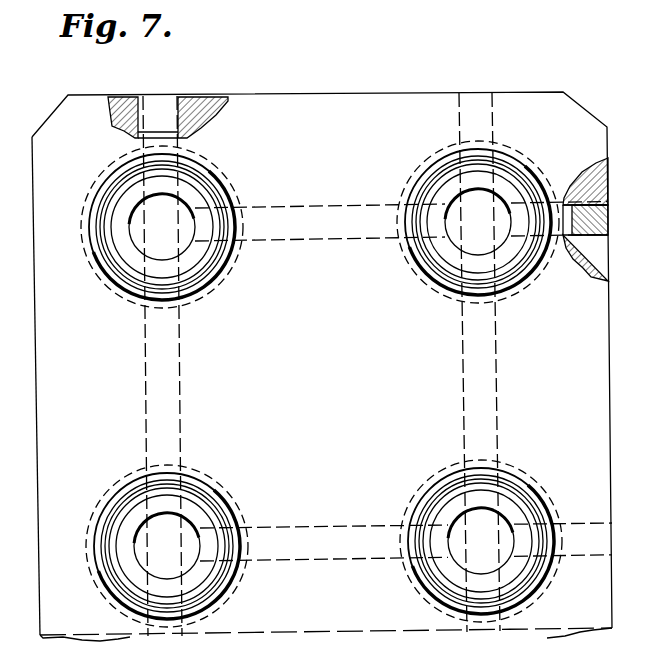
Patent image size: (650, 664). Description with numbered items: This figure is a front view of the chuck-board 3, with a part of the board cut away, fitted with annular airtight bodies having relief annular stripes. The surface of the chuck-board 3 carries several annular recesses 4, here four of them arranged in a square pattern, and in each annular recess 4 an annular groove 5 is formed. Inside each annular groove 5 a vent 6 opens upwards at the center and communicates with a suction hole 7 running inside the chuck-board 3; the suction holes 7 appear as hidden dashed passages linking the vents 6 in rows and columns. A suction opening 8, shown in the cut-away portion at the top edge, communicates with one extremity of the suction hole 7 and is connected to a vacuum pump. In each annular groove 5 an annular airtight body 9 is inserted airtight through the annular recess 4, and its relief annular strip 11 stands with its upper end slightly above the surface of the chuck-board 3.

The chuck-board 3 is at (350, 108).
The annular recess 4 is at (90, 220).
The annular groove 5 is at (122, 268).
The vent 6 is at (181, 204).
The suction hole 7 is at (320, 230).
The suction opening 8 is at (189, 98).
The annular airtight body 9 is at (443, 477).
The relief annular strip 11 is at (112, 187).